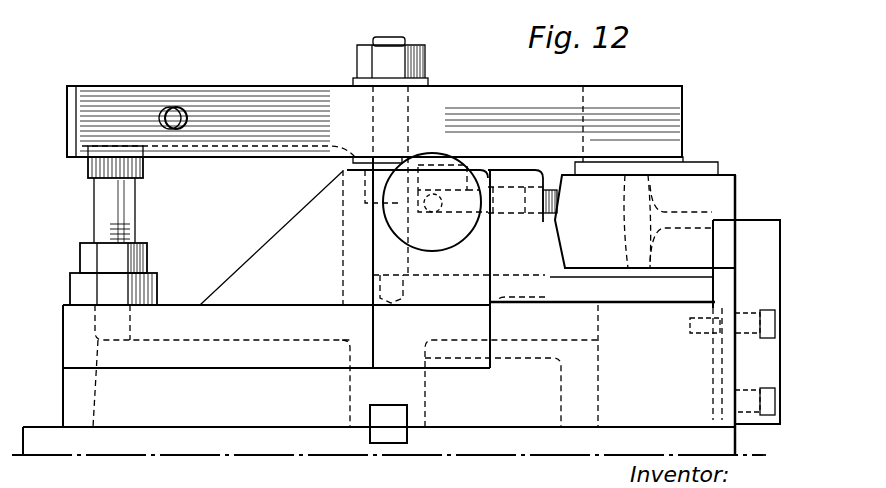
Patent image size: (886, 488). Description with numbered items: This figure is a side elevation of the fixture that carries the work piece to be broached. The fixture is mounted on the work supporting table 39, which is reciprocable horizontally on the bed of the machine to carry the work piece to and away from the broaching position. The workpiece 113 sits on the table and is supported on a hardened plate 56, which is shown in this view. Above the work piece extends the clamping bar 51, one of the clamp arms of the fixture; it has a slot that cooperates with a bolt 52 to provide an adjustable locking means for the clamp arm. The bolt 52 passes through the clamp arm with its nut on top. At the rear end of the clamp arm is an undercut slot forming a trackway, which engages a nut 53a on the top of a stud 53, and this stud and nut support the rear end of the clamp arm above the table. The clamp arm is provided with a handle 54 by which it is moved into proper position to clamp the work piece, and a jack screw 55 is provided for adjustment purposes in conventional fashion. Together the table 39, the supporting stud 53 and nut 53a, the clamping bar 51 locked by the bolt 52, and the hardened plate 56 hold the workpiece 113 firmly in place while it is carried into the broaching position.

The work supporting table 39 is at (174, 452).
The clamping bar 51 is at (262, 86).
The bolt 52 is at (410, 108).
The stud 53 is at (136, 212).
The nut 53a is at (90, 170).
The handle 54 is at (181, 108).
The jack screw 55 is at (393, 220).
The hardened plate 56 is at (665, 272).
The workpiece 113 is at (622, 212).